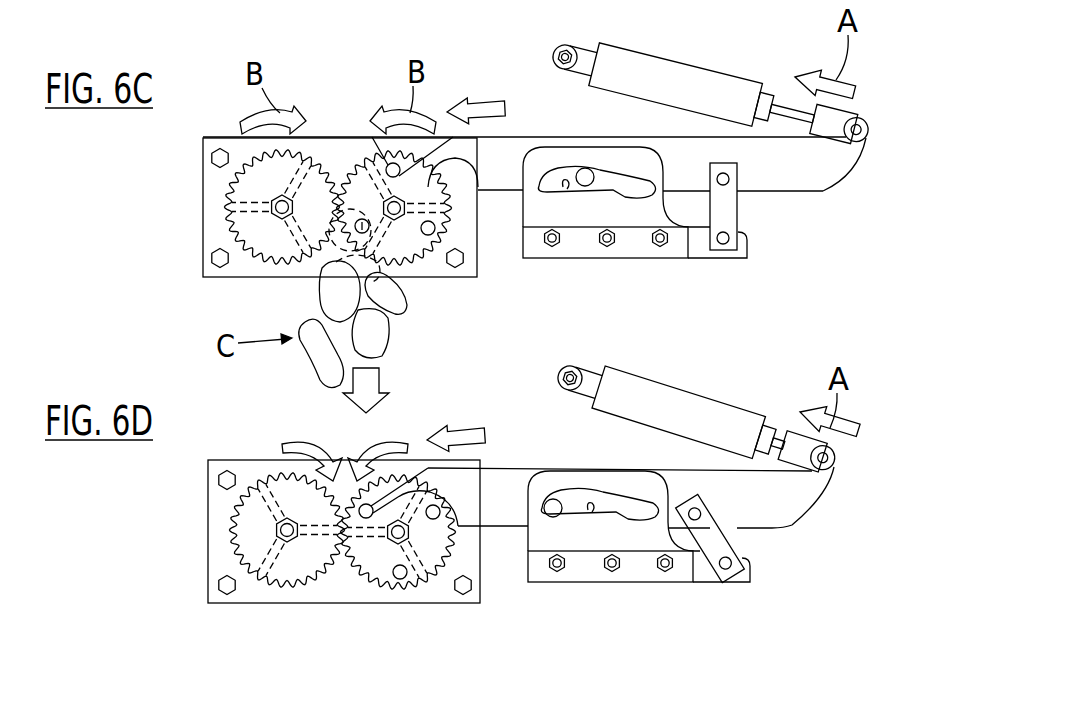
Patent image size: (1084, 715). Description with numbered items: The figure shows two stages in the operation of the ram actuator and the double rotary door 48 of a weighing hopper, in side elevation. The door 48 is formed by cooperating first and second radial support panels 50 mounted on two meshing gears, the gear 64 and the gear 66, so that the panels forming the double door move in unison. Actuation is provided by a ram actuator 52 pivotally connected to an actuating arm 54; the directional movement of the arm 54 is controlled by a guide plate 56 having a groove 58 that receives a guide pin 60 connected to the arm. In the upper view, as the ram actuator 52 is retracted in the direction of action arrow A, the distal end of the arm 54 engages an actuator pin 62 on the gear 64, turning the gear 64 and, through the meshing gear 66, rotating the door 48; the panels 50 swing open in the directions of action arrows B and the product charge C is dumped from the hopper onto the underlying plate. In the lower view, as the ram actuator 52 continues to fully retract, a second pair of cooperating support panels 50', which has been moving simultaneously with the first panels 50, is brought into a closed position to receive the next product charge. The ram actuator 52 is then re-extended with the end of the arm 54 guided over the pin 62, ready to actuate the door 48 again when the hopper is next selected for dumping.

In FIG. 6C, the double rotary door 48 is at (331, 126).
In FIG. 6D, the double rotary door 48 is at (292, 614).
In FIG. 6C, the first and second radial support panels 50 is at (315, 238).
In FIG. 6D, the first and second radial support panels 50 is at (317, 559).
In FIG. 6C, the second pair of cooperating support panels 50' is at (335, 190).
In FIG. 6D, the second pair of cooperating support panels 50' is at (320, 527).
In FIG. 6C, the ram actuator 52 is at (693, 76).
In FIG. 6D, the ram actuator 52 is at (708, 410).
In FIG. 6C, the actuating arm 54 is at (803, 168).
In FIG. 6D, the actuating arm 54 is at (790, 493).
In FIG. 6C, the guide plate 56 is at (627, 218).
In FIG. 6D, the guide plate 56 is at (668, 540).
In FIG. 6C, the groove 58 is at (567, 187).
In FIG. 6D, the groove 58 is at (592, 510).
In FIG. 6C, the guide pin 60 is at (585, 168).
In FIG. 6D, the guide pin 60 is at (553, 499).
In FIG. 6C, the actuator pin 62 is at (388, 165).
In FIG. 6D, the actuator pin 62 is at (365, 505).
In FIG. 6C, the gear 64 is at (423, 240).
In FIG. 6C, the gear 66 is at (250, 222).